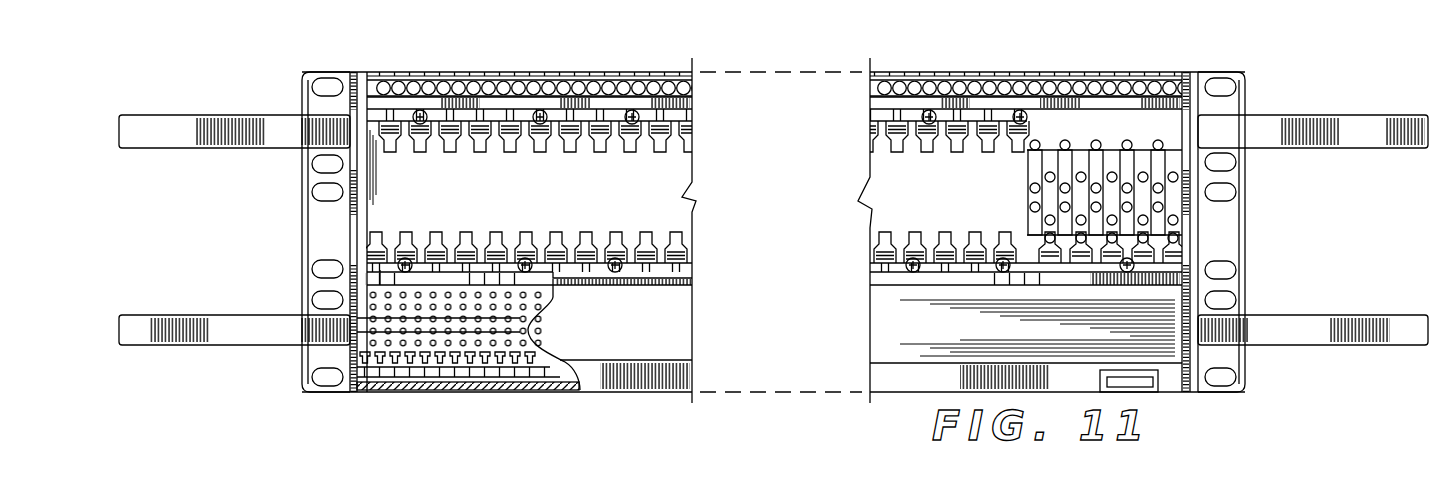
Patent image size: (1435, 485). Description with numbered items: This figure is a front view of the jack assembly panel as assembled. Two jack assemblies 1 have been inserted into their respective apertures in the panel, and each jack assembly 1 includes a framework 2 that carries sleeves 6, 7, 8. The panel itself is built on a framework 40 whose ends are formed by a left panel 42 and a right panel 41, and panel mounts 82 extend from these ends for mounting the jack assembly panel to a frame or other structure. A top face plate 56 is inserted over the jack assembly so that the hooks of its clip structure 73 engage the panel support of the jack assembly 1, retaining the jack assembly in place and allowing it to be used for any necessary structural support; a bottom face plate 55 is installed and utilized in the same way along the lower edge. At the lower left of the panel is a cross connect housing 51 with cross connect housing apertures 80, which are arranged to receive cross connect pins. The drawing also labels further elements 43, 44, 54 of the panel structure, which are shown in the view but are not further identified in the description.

The framework 40 is at (1088, 57).
The right panel 41 is at (1198, 105).
The left panel 42 is at (350, 103).
The cover strip 43 is at (470, 72).
The top face plate 56 is at (603, 100).
The clip structure 73 is at (480, 152).
The housing wall 44 is at (437, 282).
The bottom face plate 55 is at (585, 262).
The cross connect housing apertures 80 is at (512, 342).
The contact elements 54 is at (398, 363).
The cross connect housing 51 is at (365, 298).
The panel mounts 82 is at (327, 222).
The sleeve 8 is at (1035, 152).
The sleeve 7 is at (1029, 222).
The sleeve 6 is at (1098, 252).
The framework 2 is at (1173, 163).
The jack assembly 1 is at (1185, 223).